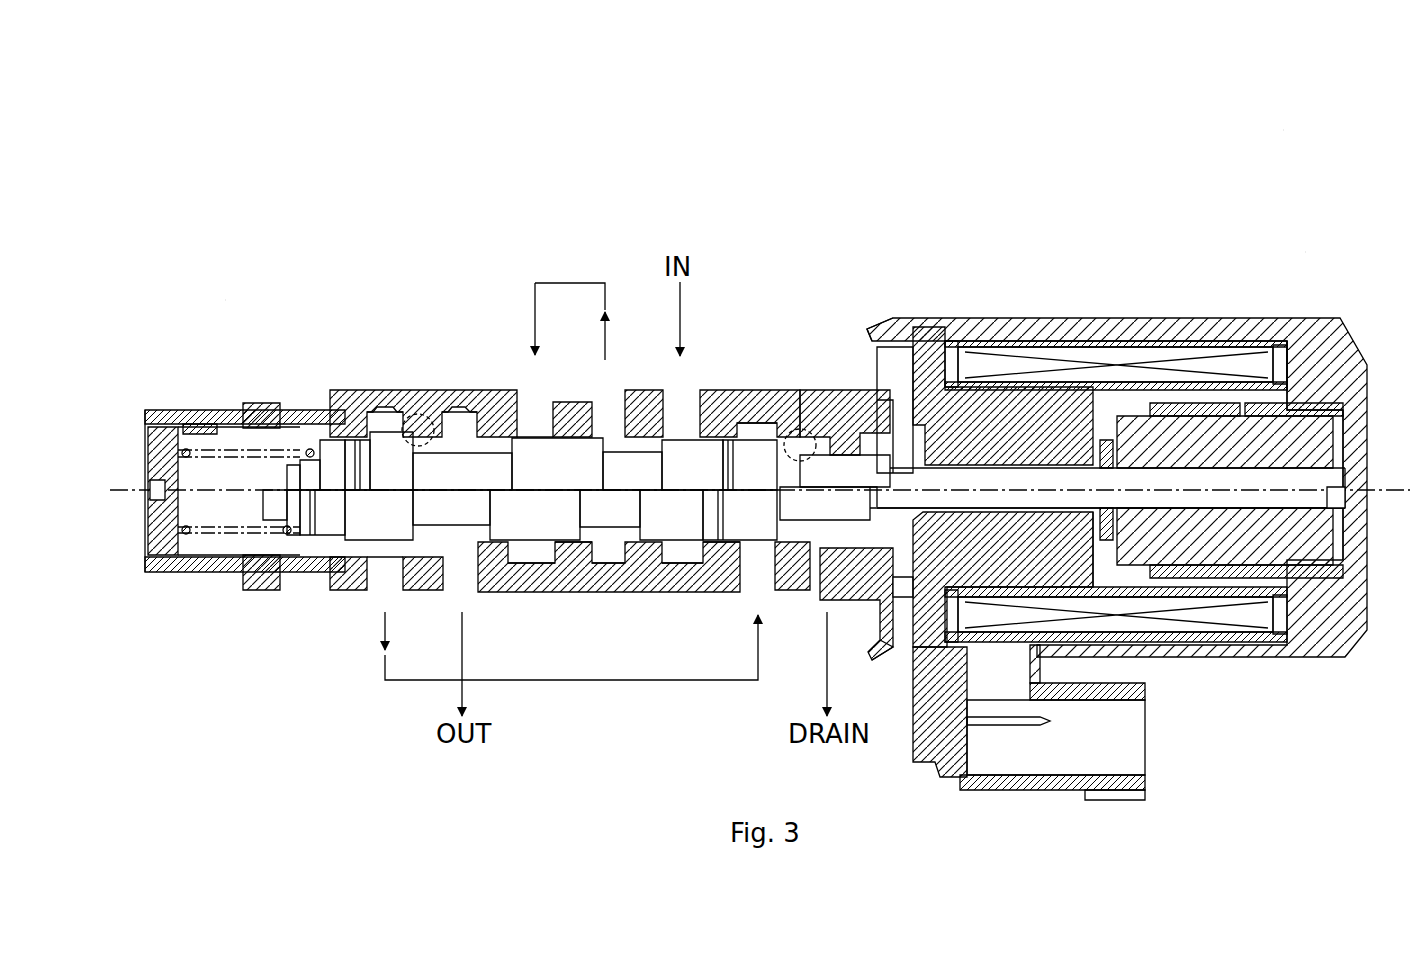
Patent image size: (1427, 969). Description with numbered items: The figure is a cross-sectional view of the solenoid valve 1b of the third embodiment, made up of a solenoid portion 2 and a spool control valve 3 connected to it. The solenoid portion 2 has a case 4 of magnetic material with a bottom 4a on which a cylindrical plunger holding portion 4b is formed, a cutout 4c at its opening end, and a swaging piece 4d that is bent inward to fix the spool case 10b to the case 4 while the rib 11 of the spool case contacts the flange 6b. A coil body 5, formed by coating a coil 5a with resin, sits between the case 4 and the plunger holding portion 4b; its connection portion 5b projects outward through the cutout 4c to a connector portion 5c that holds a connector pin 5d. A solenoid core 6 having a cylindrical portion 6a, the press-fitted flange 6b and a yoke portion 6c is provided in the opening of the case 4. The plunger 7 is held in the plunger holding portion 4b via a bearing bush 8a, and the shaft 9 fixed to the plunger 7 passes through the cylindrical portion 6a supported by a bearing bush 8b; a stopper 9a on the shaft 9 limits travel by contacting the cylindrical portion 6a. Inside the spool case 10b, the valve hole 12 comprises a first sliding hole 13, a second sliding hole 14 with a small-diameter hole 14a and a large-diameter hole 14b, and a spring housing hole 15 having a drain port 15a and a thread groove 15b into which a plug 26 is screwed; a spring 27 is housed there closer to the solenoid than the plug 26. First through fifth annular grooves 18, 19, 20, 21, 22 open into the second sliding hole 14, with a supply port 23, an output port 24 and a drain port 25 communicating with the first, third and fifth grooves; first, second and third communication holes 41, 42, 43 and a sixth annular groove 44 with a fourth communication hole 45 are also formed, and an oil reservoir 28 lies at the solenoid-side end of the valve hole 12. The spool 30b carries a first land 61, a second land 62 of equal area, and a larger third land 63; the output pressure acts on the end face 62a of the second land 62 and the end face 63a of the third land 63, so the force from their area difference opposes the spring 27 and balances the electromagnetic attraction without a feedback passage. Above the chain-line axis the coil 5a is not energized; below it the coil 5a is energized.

The solenoid valve 1b is at (1283, 130).
The solenoid portion 2 is at (1305, 252).
The spool control valve 3 is at (225, 300).
The case 4 is at (1305, 316).
The bottom 4a is at (1362, 460).
The plunger holding portion 4b is at (1215, 400).
The cutout 4c is at (1040, 650).
The swaging piece 4d is at (880, 326).
The coil body 5 is at (1196, 340).
The coil 5a is at (1165, 340).
The connection portion 5b is at (918, 660).
The connector portion 5c is at (1050, 788).
The connector pin 5d is at (1035, 722).
The solenoid core 6 is at (1000, 400).
The cylindrical portion 6a is at (1040, 400).
The flange 6b is at (932, 335).
The yoke portion 6c is at (1080, 420).
The plunger 7 is at (1335, 425).
The bearing bush 8a is at (1300, 400).
The bearing bush 8b is at (958, 450).
The shaft 9 is at (1335, 510).
The stopper 9a is at (1098, 515).
The spool case 10b is at (165, 412).
The rib 11 is at (870, 338).
The valve hole 12 is at (800, 440).
The first sliding hole 13 is at (730, 592).
The second sliding hole 14 is at (496, 432).
The small-diameter hole 14a is at (580, 592).
The large-diameter hole 14b is at (428, 590).
The spring housing hole 15 is at (262, 410).
The drain port 15a is at (298, 590).
The thread groove 15b is at (190, 424).
The first annular groove 18 is at (690, 592).
The second annular groove 19 is at (636, 592).
The third annular groove 20 is at (540, 592).
The fourth annular groove 21 is at (460, 392).
The fifth annular groove 22 is at (390, 390).
The supply port 23 is at (702, 410).
The output port 24 is at (482, 592).
The drain port 25 is at (845, 588).
The plug 26 is at (150, 450).
The spring 27 is at (206, 560).
The oil reservoir 28 is at (910, 537).
The spool 30b is at (845, 412).
The first communication hole 41 is at (632, 390).
The second communication hole 42 is at (561, 360).
The third communication hole 43 is at (363, 592).
The sixth annular groove 44 is at (752, 426).
The fourth communication hole 45 is at (790, 592).
The first land 61 is at (718, 425).
The second land 62 is at (584, 403).
The end face 62a is at (510, 468).
The third land 63 is at (432, 432).
The end face 63a is at (341, 486).